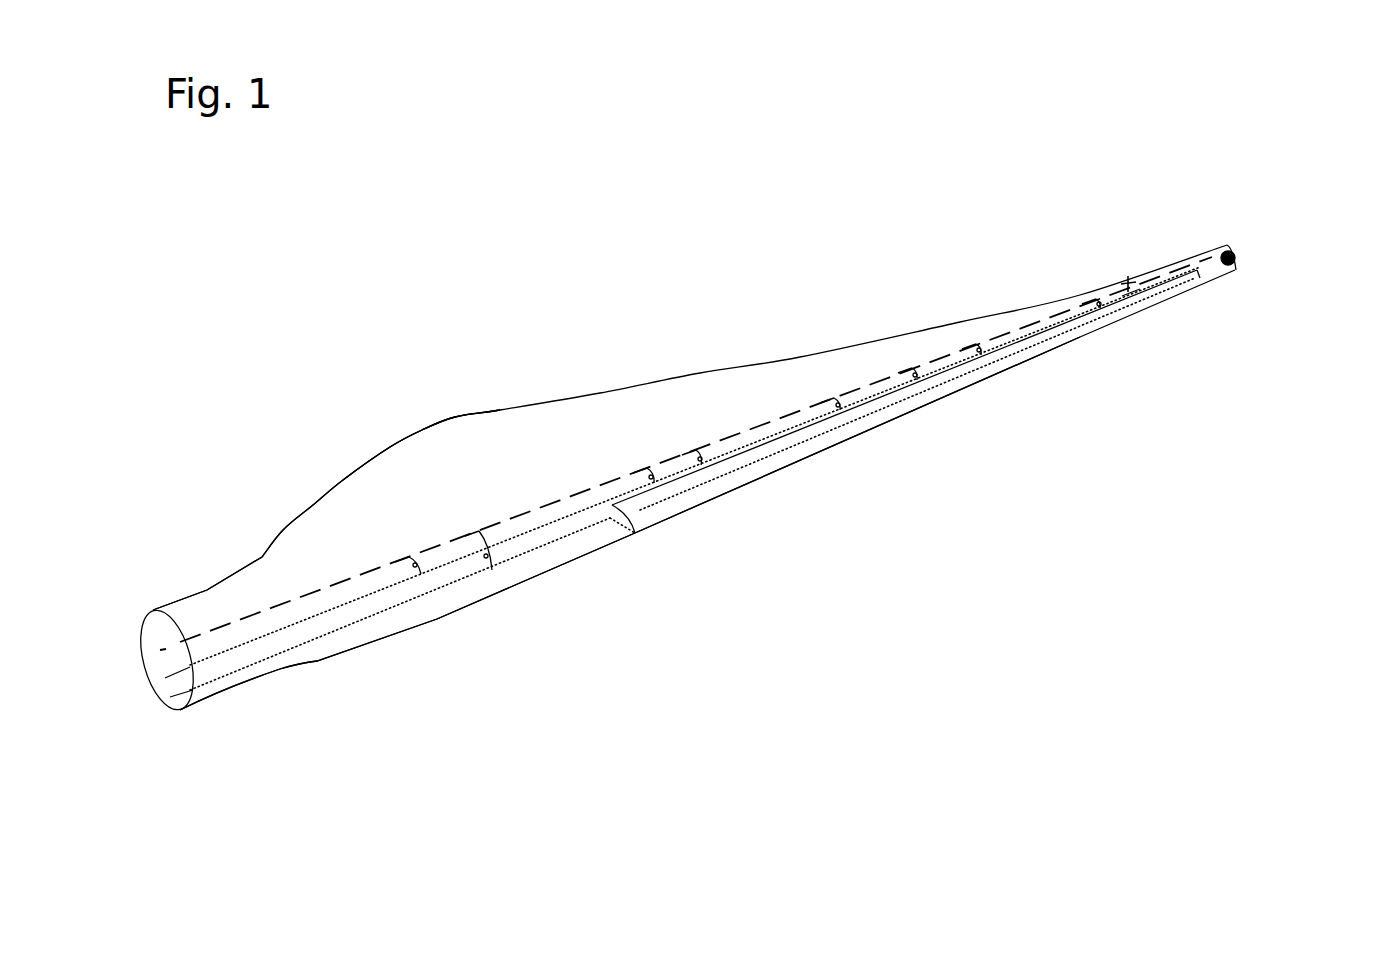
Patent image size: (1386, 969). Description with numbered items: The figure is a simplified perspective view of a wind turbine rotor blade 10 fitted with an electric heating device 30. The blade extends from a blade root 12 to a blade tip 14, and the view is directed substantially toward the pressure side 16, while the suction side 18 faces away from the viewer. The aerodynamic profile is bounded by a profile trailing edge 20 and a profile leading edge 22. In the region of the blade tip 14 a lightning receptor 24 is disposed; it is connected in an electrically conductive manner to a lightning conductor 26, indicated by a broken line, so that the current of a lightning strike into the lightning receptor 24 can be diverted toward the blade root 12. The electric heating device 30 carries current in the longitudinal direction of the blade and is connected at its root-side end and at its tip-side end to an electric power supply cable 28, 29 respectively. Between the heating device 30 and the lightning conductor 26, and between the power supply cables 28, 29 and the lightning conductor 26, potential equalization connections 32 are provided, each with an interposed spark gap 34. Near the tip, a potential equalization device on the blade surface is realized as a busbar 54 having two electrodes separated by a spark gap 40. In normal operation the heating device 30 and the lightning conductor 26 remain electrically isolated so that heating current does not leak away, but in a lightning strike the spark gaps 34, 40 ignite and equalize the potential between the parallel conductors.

The wind turbine rotor blade 10 is at (880, 508).
The blade root 12 is at (155, 683).
The blade tip 14 is at (1230, 247).
The pressure side 16 is at (367, 505).
The suction side 18 is at (376, 648).
The profile trailing edge 20 is at (422, 430).
The profile leading edge 22 is at (560, 570).
The lightning receptor 24 is at (1237, 262).
The lightning conductor 26 is at (320, 588).
The electric power supply cable 28 is at (420, 600).
The electric power supply cable 29 is at (462, 567).
The electric heating device 30 is at (707, 503).
The potential equalization connection 32 is at (477, 530).
The spark gap 34 is at (490, 560).
The spark gap 40 is at (1133, 292).
The busbar 54 is at (1124, 280).